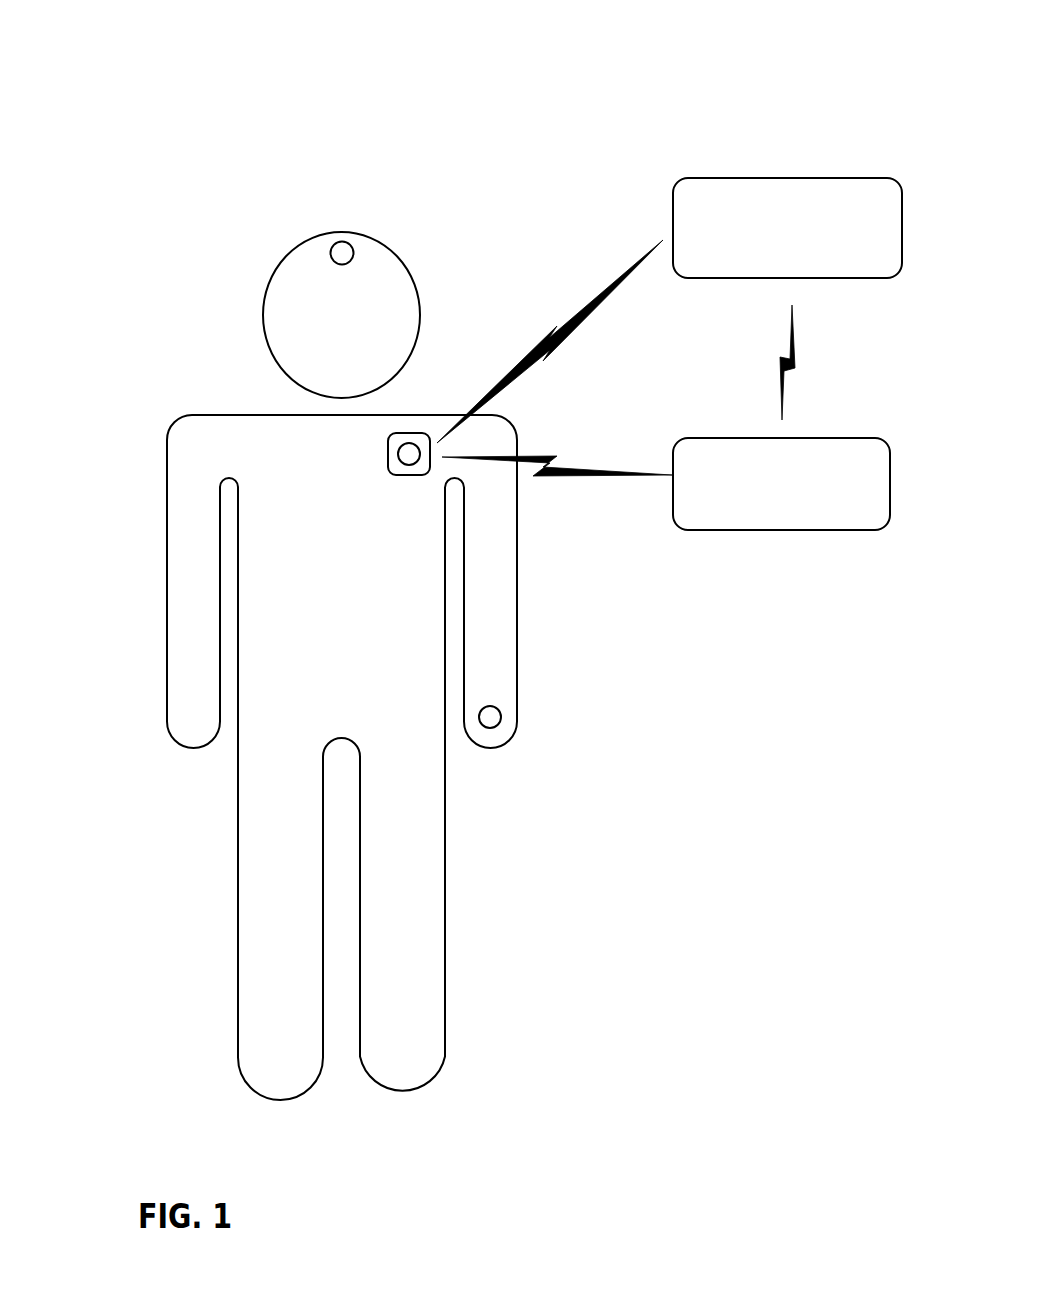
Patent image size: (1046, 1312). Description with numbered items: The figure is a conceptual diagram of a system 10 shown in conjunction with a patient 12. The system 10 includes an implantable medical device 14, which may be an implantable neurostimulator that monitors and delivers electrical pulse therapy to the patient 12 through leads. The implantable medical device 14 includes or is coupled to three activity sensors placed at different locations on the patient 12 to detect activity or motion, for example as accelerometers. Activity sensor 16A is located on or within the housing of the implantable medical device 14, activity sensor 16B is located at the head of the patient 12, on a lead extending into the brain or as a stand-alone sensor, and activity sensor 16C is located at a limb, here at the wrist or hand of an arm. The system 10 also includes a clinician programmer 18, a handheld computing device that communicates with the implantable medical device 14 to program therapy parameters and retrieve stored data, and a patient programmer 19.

The system 10 is at (244, 80).
The patient 12 is at (131, 485).
The implantable medical device 14 is at (390, 471).
The activity sensor 16A is at (409, 449).
The activity sensor 16B is at (341, 250).
The activity sensor 16C is at (493, 712).
The clinician programmer 18 is at (802, 267).
The patient programmer 19 is at (797, 525).